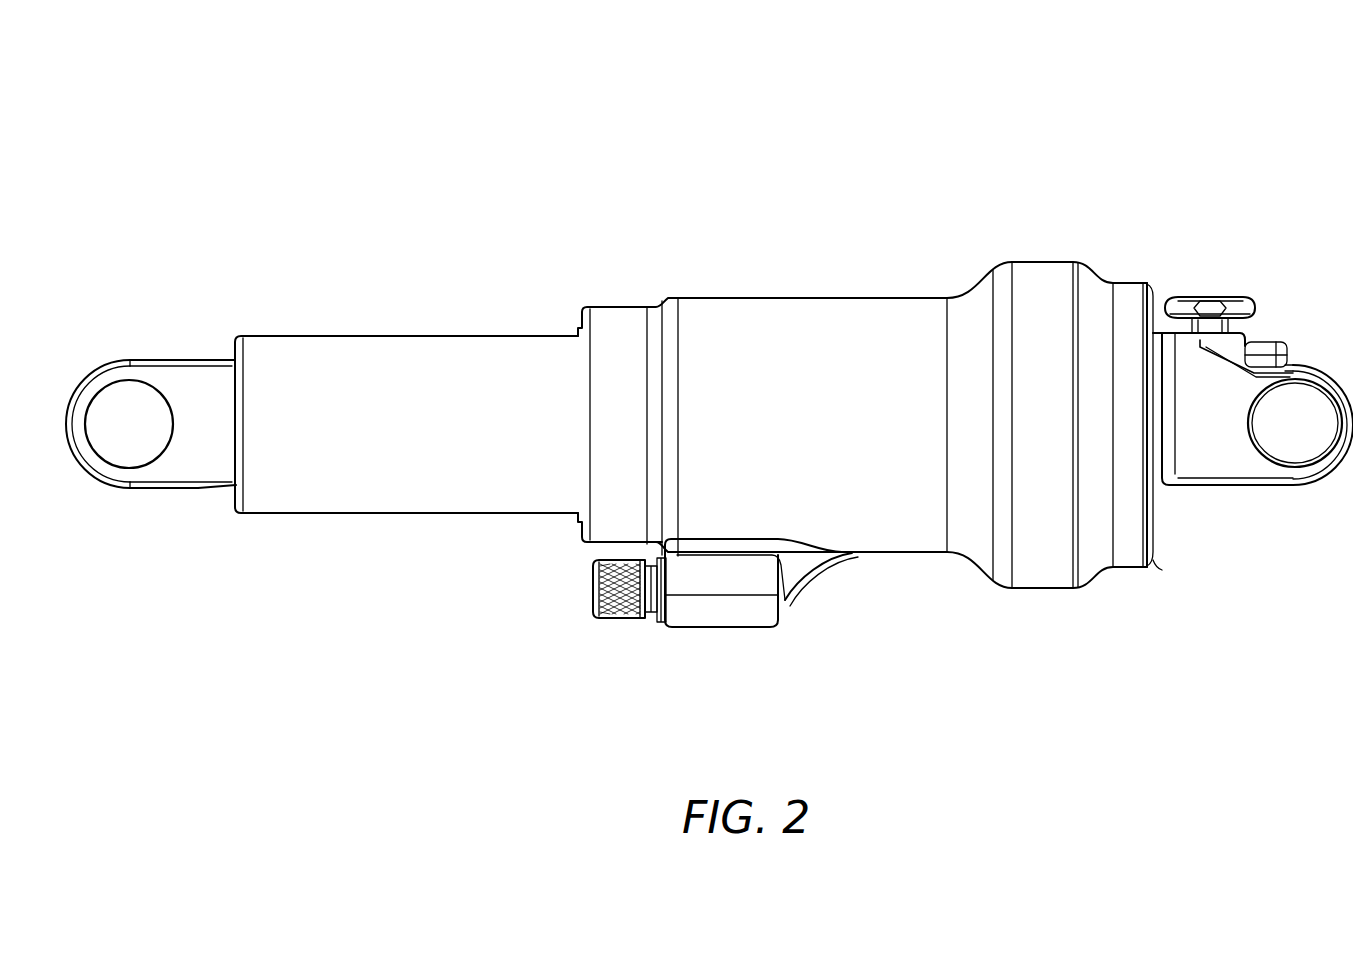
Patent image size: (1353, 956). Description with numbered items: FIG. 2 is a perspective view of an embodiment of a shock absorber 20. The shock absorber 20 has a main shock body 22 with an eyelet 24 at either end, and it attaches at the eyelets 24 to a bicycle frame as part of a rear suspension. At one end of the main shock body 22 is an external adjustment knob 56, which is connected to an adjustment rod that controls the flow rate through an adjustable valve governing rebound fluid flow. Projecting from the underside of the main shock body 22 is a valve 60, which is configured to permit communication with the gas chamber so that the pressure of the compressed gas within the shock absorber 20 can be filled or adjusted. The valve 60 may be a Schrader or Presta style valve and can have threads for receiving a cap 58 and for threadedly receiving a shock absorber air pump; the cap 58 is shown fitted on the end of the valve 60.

The shock absorber 20 is at (716, 116).
The main shock body 22 is at (844, 214).
The eyelet 24 is at (110, 378).
The external adjustment knob 56 is at (1205, 296).
The cap 58 is at (623, 621).
The valve 60 is at (734, 672).